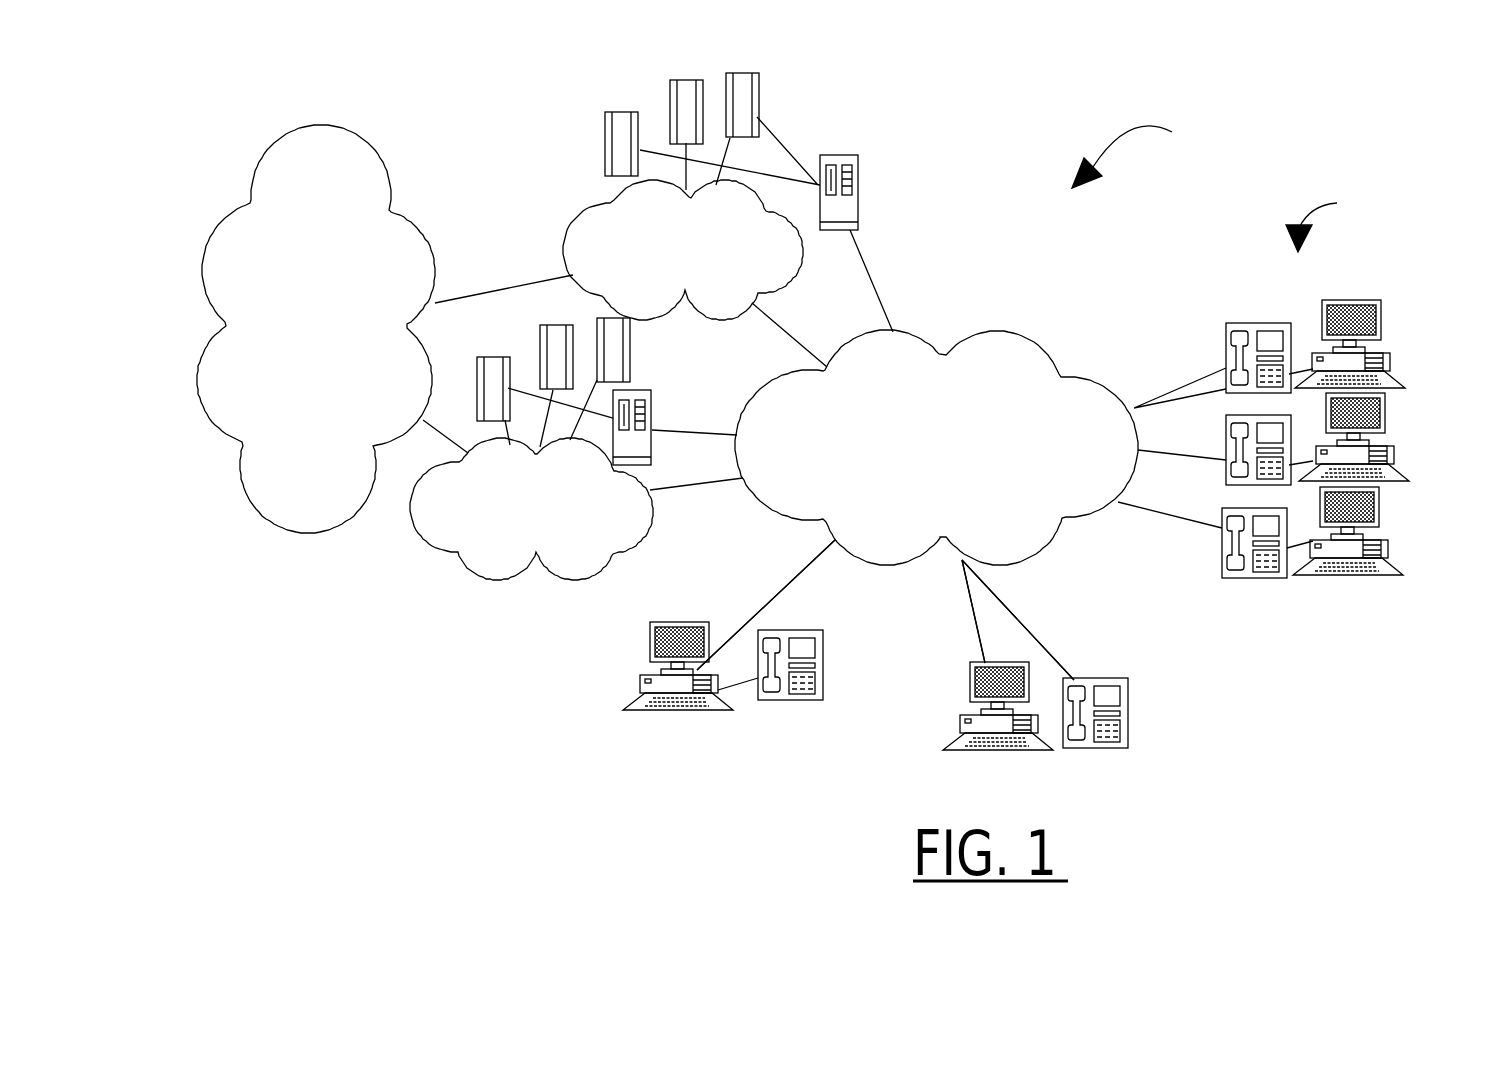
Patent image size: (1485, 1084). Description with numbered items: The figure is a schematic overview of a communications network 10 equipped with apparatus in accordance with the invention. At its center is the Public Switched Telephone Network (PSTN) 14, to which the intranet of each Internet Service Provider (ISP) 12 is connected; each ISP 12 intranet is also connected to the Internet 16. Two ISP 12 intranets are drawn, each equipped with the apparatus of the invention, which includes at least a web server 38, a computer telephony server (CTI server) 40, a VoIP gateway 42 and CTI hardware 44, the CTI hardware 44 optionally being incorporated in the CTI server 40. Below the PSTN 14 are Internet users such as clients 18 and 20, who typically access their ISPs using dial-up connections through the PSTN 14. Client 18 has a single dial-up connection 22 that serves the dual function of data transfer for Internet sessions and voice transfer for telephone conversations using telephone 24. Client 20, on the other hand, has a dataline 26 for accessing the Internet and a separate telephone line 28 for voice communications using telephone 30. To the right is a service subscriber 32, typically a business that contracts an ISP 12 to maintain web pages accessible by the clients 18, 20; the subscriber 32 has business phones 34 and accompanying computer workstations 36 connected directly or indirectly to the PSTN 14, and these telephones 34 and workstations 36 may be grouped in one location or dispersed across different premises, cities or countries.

The communications network 10 is at (1139, 155).
The Internet Service Provider (ISP) 12 is at (590, 205).
The Public Switched Telephone Network (PSTN) 14 is at (988, 330).
The Internet 16 is at (392, 176).
The client 18 is at (668, 695).
The client 20 is at (995, 743).
The single dial-up connection 22 is at (778, 598).
The telephone 24 is at (792, 703).
The dataline 26 is at (980, 640).
The telephone line 28 is at (1020, 618).
The telephone 30 is at (1120, 728).
The service subscriber 32 is at (1328, 222).
The business phone 34 is at (1227, 345).
The computer workstation 36 is at (1329, 306).
The web server 38 is at (623, 120).
The computer telephony server (CTI Server) 40 is at (673, 97).
The VoIP gateway 42 is at (750, 100).
The CTI hardware 44 is at (870, 200).